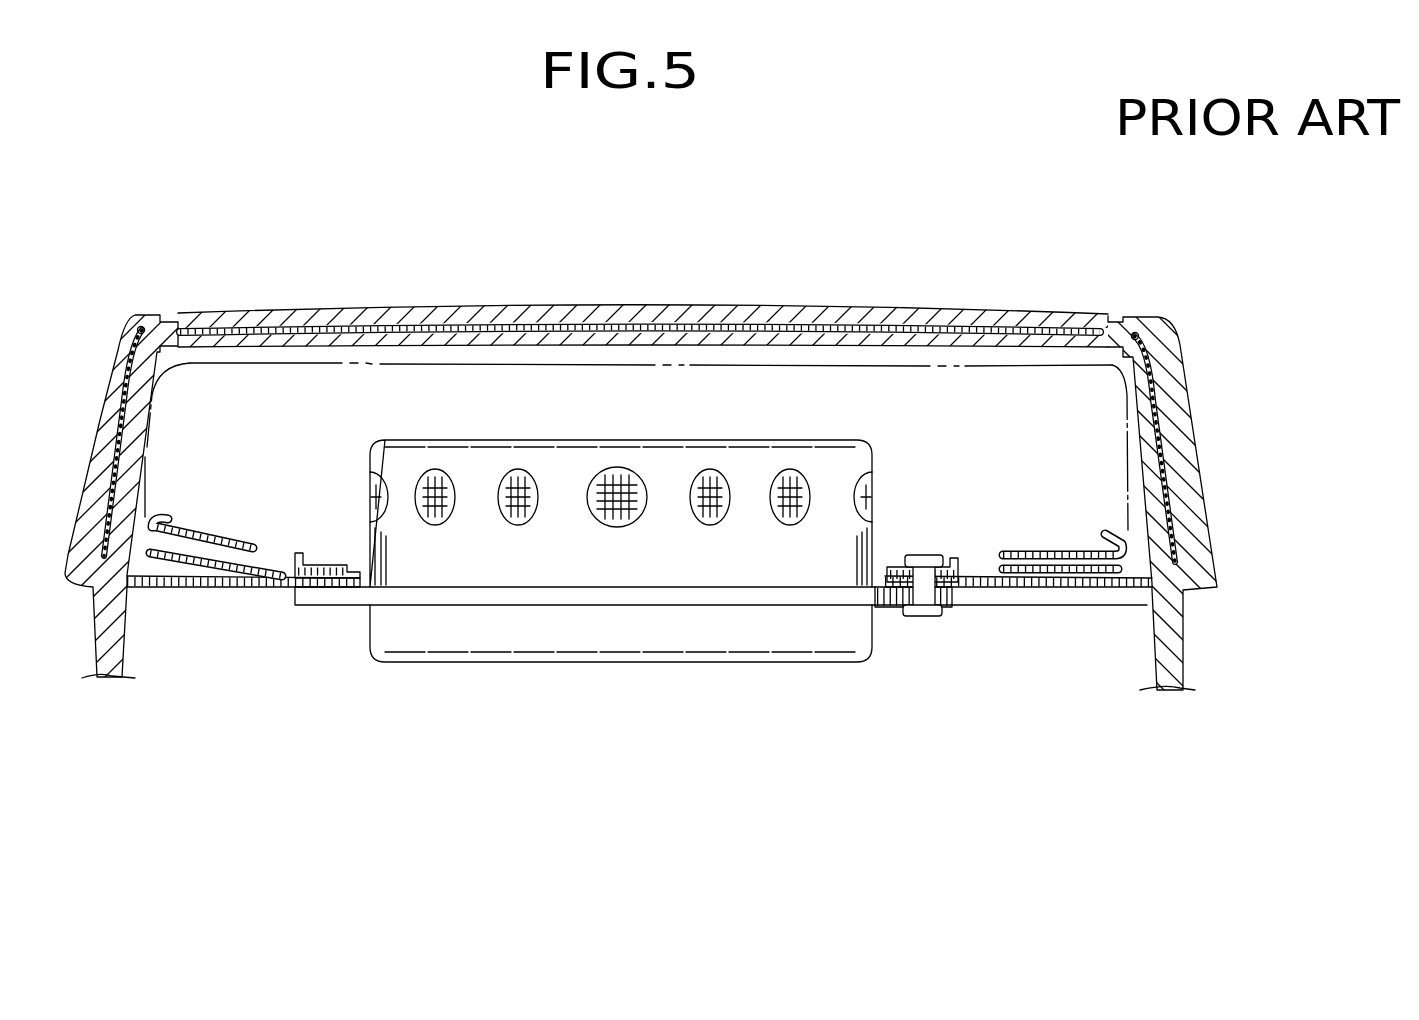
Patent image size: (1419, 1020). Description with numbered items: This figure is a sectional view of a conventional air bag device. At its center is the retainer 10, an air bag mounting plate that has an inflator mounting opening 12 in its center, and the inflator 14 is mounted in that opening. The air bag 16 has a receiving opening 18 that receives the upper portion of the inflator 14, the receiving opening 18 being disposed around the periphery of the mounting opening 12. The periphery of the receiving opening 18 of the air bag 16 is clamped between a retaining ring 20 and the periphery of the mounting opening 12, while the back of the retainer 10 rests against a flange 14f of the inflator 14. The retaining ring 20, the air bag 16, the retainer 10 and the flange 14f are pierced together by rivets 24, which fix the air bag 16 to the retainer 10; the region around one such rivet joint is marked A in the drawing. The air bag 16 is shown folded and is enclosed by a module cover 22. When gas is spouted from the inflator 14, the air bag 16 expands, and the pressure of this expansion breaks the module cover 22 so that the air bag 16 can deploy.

The retainer 10 is at (182, 588).
The inflator mounting opening 12 is at (363, 588).
The inflator 14 is at (488, 648).
The flange 14f is at (893, 608).
The air bag 16 is at (383, 363).
The receiving opening 18 is at (360, 572).
The retaining ring 20 is at (322, 562).
The module cover 22 is at (877, 304).
The rivets 24 is at (947, 614).
The detail region A is at (928, 647).